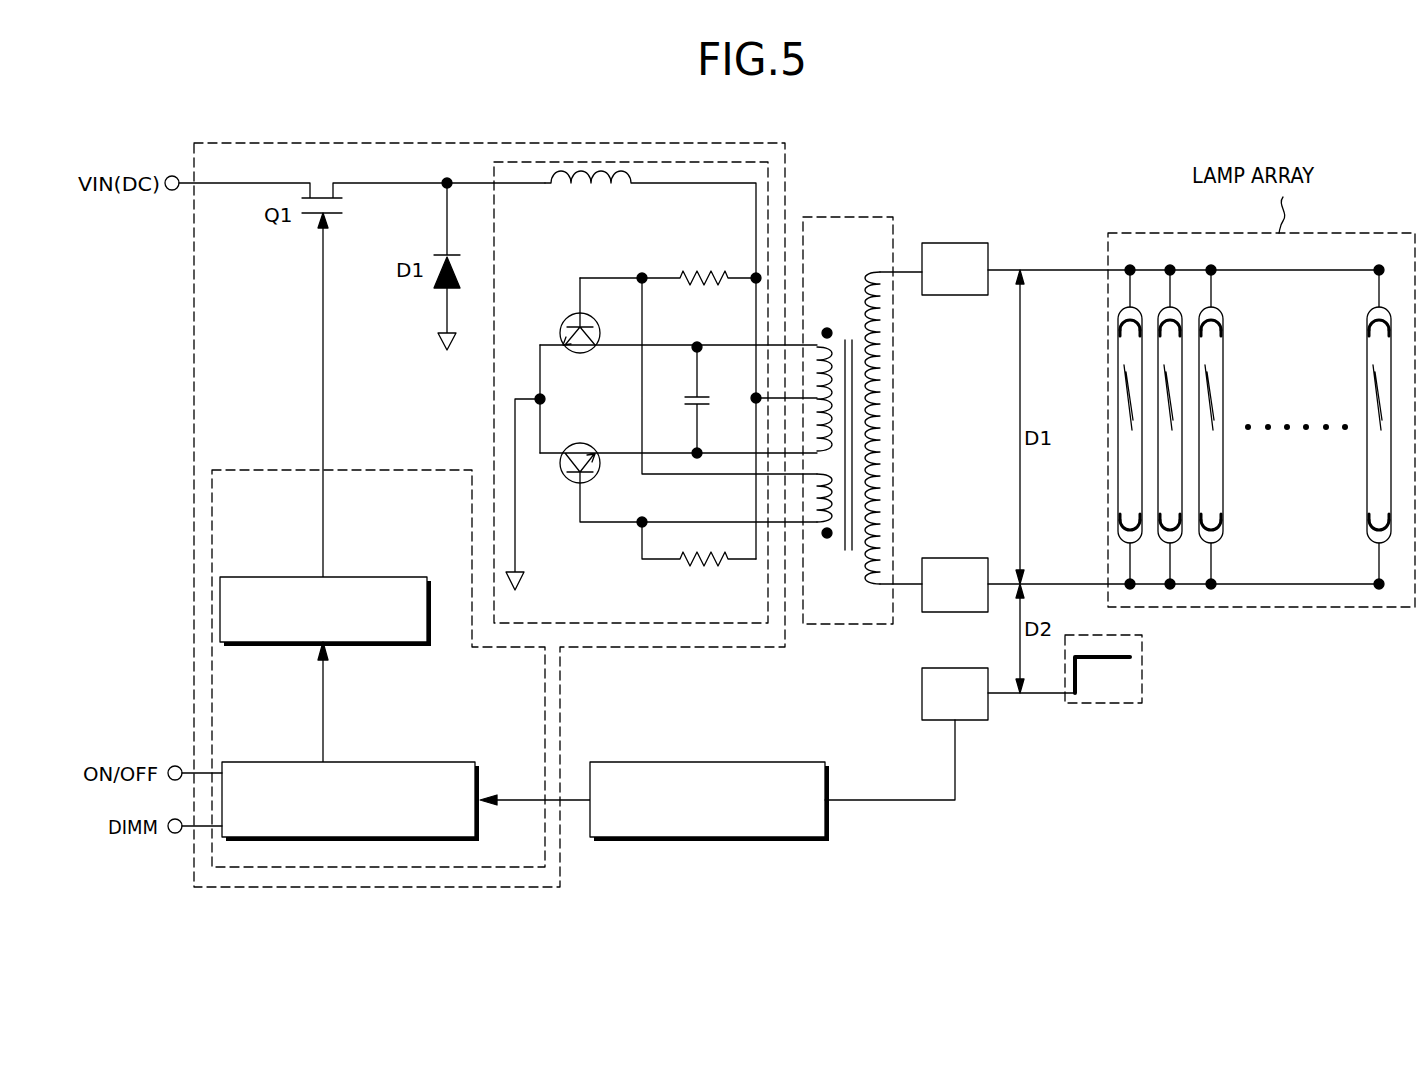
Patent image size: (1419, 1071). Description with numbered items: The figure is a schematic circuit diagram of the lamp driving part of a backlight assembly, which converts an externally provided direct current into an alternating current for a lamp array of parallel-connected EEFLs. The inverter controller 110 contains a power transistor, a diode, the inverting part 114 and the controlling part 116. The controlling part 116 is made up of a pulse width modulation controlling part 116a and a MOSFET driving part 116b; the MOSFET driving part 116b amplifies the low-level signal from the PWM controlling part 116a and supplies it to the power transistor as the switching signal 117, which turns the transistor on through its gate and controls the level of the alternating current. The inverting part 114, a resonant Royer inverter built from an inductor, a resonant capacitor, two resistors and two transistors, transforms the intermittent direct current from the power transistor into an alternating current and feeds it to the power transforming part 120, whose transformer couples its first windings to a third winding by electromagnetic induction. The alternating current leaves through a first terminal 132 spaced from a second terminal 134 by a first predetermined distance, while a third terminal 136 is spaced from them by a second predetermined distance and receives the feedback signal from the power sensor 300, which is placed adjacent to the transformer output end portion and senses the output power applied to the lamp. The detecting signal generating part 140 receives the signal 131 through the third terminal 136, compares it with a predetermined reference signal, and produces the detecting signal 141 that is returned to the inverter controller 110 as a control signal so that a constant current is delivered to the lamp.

The inverter controller 110 is at (194, 325).
The inverting part 114 is at (494, 376).
The controlling part 116 is at (433, 469).
The pulse width modulation (PWM) controlling part 116a is at (430, 761).
The MOSFET driving part 116b is at (414, 574).
The switching signal 117 is at (323, 349).
The power transforming part 120 is at (863, 217).
The signal 131 is at (858, 800).
The first terminal 132 is at (955, 296).
The second terminal 134 is at (954, 558).
The third terminal 136 is at (954, 668).
The detecting signal generating part 140 is at (810, 762).
The detecting signal 141 is at (578, 796).
The power sensor 300 is at (1113, 705).